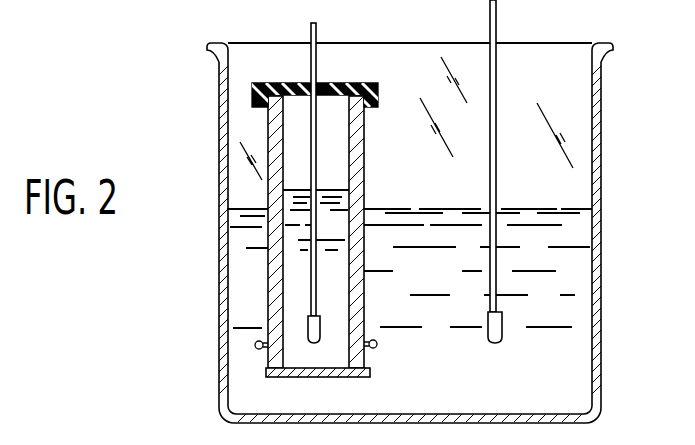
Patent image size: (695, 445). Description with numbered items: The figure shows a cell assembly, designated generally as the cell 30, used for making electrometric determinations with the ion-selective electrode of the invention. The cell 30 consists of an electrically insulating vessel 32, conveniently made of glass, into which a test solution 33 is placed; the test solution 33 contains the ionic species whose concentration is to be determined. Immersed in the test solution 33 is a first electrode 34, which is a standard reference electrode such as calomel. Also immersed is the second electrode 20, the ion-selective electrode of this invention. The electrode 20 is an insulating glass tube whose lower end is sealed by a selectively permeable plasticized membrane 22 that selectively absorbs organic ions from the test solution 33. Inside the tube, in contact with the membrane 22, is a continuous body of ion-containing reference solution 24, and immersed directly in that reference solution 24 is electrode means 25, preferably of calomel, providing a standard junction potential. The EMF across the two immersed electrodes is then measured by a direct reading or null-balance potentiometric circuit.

The ion-selective electrode 20 is at (364, 122).
The selectively permeable plasticized membrane 22 is at (373, 364).
The ion-containing reference solution 24 is at (328, 190).
The electrode means 25 is at (316, 42).
The cell 30 is at (615, 243).
The electrically insulating vessel 32 is at (603, 398).
The test solution 33 is at (567, 308).
The first electrode 34 is at (497, 35).